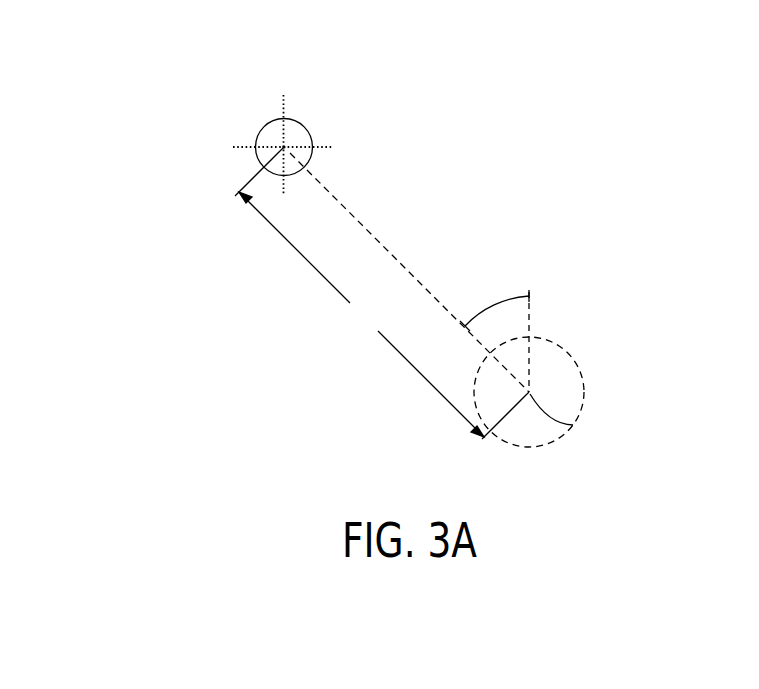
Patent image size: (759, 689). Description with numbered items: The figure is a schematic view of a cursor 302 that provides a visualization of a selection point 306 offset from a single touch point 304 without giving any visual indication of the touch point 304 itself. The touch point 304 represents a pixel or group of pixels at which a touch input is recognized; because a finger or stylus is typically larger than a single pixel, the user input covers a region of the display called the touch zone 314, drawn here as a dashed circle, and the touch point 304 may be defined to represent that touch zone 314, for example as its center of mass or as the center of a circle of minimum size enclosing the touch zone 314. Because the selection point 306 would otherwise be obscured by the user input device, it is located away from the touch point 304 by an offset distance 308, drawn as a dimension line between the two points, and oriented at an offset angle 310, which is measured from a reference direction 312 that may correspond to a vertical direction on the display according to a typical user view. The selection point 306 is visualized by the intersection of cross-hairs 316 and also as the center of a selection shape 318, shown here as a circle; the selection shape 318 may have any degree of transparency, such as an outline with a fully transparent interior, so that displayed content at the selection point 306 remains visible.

The cursor 302 is at (240, 79).
The touch point 304 is at (573, 425).
The selection point 306 is at (284, 146).
The offset distance 308 is at (359, 292).
The offset angle 310 is at (492, 305).
The reference direction 312 is at (530, 315).
The touch zone 314 is at (578, 368).
The cross-hairs 316 is at (284, 113).
The selection shape 318 is at (258, 158).